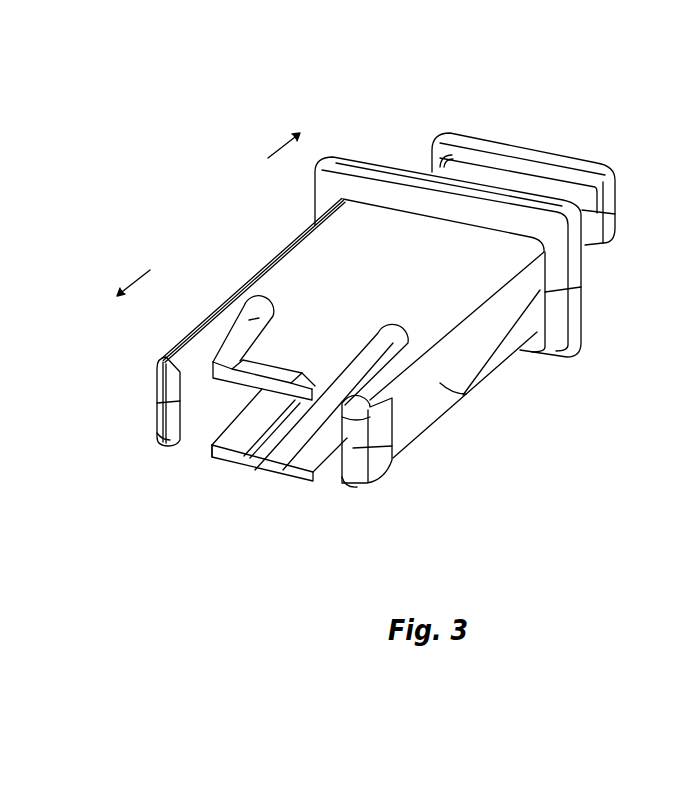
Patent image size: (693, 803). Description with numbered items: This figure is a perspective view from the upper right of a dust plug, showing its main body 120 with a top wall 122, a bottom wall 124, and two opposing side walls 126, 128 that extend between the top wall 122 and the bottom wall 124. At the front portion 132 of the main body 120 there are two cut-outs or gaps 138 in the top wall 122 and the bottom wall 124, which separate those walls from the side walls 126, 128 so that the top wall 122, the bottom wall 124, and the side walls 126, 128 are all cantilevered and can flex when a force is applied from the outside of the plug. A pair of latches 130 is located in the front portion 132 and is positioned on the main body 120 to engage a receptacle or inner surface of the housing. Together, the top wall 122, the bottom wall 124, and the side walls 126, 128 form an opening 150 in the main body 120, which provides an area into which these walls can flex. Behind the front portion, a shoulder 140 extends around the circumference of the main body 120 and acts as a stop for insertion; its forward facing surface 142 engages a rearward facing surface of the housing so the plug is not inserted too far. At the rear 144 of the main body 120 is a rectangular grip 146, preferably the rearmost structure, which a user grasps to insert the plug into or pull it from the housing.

The main body 120 is at (240, 259).
The top wall 122 is at (426, 252).
The bottom wall 124 is at (313, 481).
The side wall 126 is at (466, 394).
The side wall 128 is at (207, 323).
The latches 130 is at (157, 409).
The front portion 132 is at (209, 439).
The cut-outs or gaps 138 is at (270, 300).
The shoulder 140 is at (584, 298).
The forward facing surface 142 is at (560, 332).
The rear 144 is at (580, 134).
The grip 146 is at (545, 150).
The opening 150 is at (300, 455).